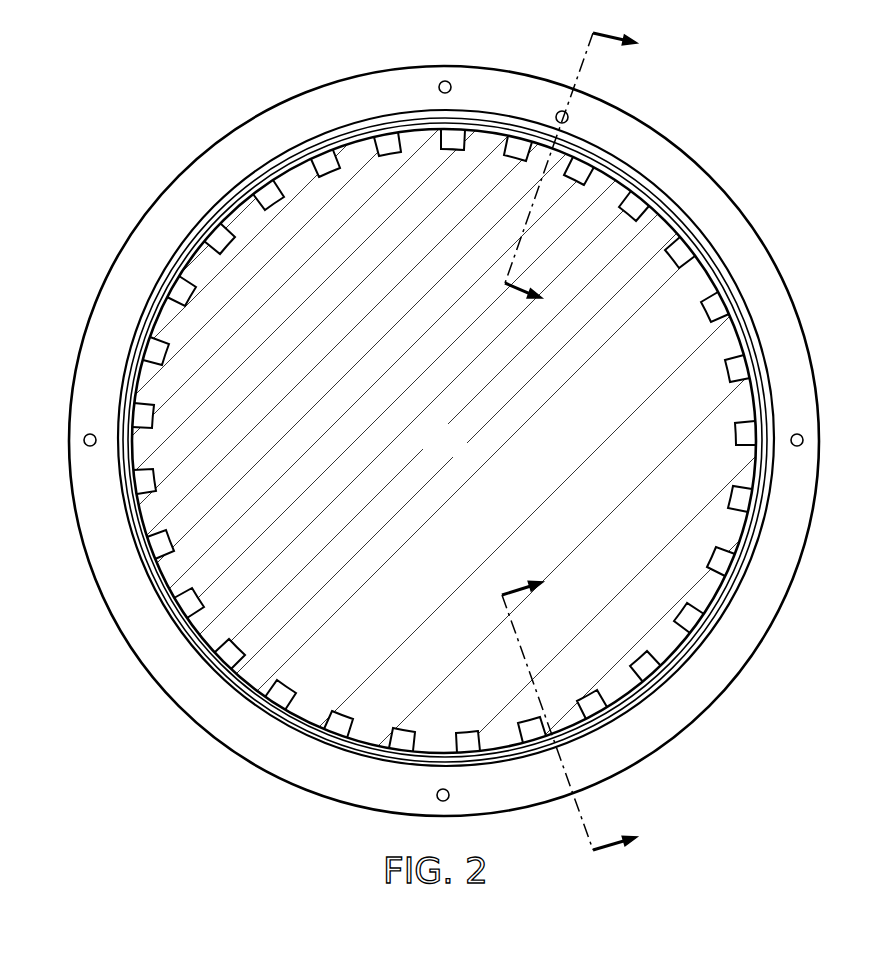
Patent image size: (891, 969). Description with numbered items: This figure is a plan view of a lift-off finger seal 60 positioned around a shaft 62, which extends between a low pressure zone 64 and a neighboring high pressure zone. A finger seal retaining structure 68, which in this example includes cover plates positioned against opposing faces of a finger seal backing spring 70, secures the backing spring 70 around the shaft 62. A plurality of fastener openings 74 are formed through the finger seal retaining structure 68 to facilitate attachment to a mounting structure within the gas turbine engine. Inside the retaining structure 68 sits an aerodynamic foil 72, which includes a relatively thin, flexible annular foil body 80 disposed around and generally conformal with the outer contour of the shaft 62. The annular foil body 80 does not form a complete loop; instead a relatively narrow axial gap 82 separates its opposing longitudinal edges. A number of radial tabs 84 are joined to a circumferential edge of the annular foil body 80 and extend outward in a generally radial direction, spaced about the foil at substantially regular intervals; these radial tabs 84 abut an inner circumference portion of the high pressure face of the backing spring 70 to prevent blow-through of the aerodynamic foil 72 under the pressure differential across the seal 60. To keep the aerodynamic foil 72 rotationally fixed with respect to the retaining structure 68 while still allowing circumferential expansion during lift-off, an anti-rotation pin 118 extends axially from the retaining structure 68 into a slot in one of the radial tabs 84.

The lift-off finger seal 60 is at (445, 484).
The shaft 62 is at (462, 454).
The low pressure zone 64 is at (213, 237).
The finger seal retaining structure 68 is at (444, 441).
The finger seal backing spring 70 is at (455, 438).
The aerodynamic foil 72 is at (445, 440).
The fastener openings 74 is at (452, 89).
The annular foil body 80 is at (275, 197).
The axial gap 82 is at (447, 145).
The radial tabs 84 is at (163, 323).
The anti-rotation pin 118 is at (568, 115).